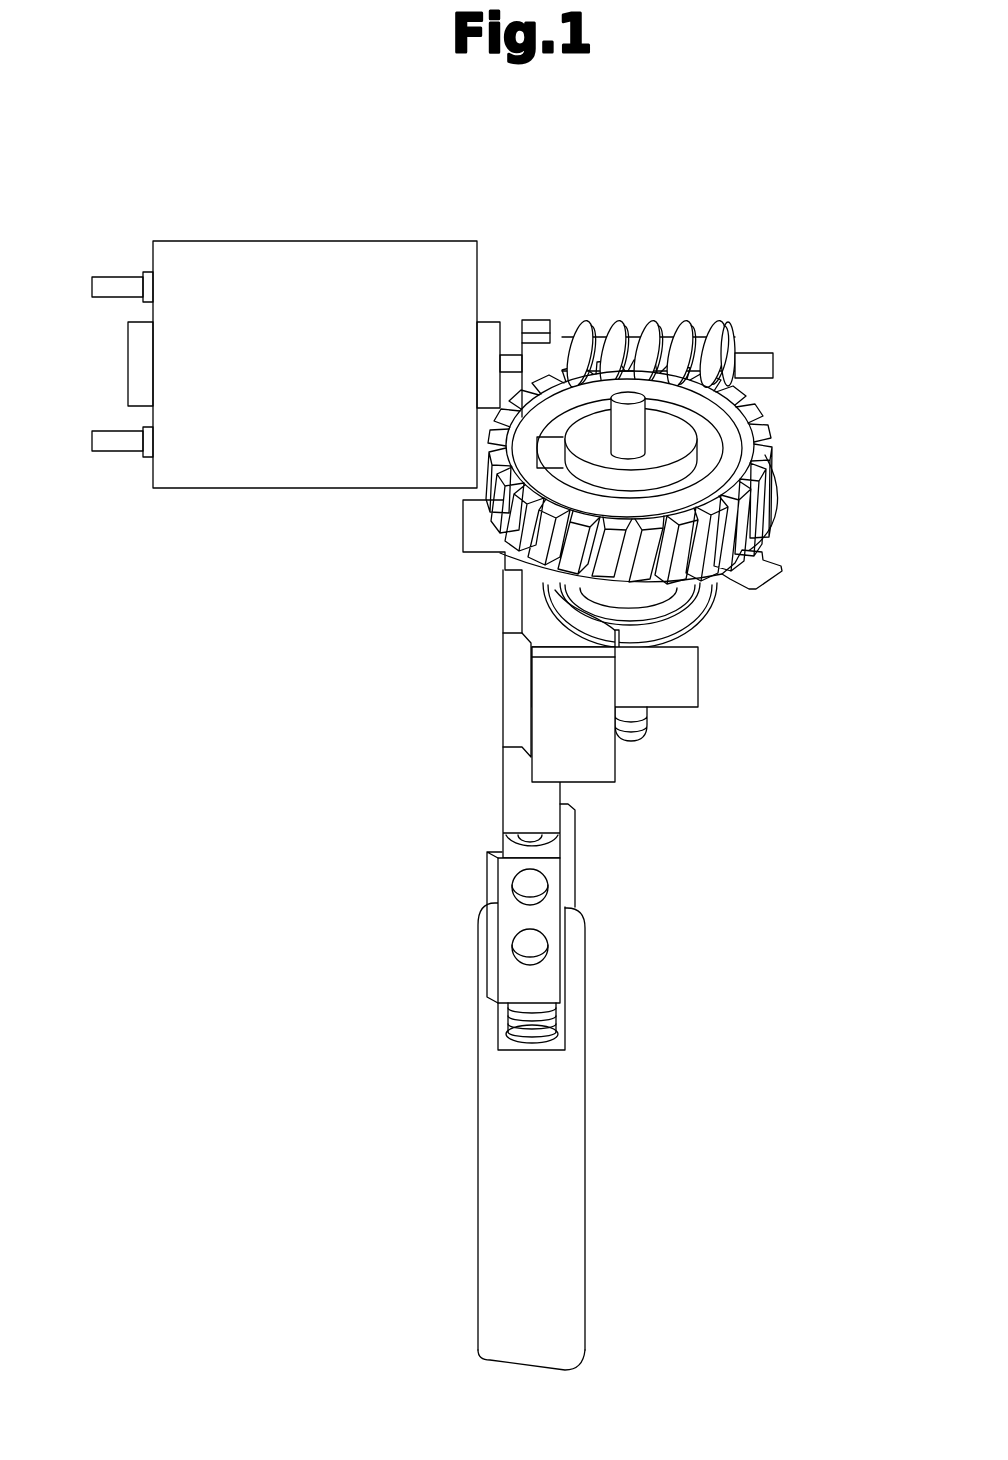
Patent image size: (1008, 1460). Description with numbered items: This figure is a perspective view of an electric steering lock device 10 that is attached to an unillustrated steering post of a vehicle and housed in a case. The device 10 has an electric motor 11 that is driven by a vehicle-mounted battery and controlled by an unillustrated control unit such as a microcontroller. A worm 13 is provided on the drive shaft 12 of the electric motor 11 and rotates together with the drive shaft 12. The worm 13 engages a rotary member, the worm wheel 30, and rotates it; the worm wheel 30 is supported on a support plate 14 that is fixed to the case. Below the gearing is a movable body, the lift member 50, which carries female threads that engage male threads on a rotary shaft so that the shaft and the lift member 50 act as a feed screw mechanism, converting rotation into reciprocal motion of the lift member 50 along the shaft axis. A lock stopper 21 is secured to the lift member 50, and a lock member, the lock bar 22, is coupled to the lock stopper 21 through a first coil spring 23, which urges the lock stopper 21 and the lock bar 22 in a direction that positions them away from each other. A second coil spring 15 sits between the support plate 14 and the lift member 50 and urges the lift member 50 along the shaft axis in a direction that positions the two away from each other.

The electric steering lock device 10 is at (751, 254).
The electric motor 11 is at (285, 253).
The drive shaft 12 is at (773, 364).
The worm 13 is at (679, 341).
The support plate 14 is at (763, 563).
The second coil spring 15 is at (712, 613).
The lock stopper 21 is at (607, 767).
The lock bar 22 is at (575, 1078).
The first coil spring 23 is at (555, 1010).
The worm wheel 30 is at (747, 412).
The lift member 50 is at (698, 693).